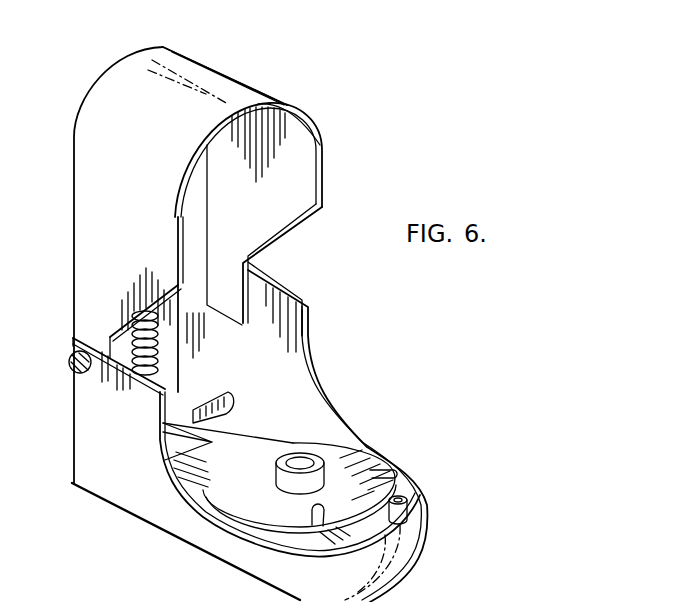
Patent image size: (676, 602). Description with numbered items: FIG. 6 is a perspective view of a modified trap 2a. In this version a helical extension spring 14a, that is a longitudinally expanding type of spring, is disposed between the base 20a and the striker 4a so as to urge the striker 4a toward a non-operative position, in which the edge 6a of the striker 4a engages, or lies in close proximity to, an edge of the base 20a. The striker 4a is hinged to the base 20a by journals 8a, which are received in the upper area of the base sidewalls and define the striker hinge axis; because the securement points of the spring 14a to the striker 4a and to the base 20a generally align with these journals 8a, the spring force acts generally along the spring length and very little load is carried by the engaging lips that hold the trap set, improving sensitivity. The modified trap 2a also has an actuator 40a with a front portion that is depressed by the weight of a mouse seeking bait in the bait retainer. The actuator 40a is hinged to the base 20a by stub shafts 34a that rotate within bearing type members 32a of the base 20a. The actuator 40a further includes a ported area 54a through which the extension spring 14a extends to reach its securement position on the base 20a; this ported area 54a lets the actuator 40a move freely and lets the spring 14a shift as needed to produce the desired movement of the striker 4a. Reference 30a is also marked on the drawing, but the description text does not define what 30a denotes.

The modified trap 2a is at (360, 397).
The striker 4a is at (291, 100).
The edge of the striker 6a is at (290, 104).
The journals of the striker 8a is at (78, 371).
The helical extension spring 14a is at (160, 360).
The partition wall 30a is at (208, 373).
The bearing type members 32a is at (237, 413).
The stub shafts 34a is at (232, 399).
The actuator 40a is at (400, 478).
The ported area 54a is at (170, 457).
The base 20a is at (413, 573).